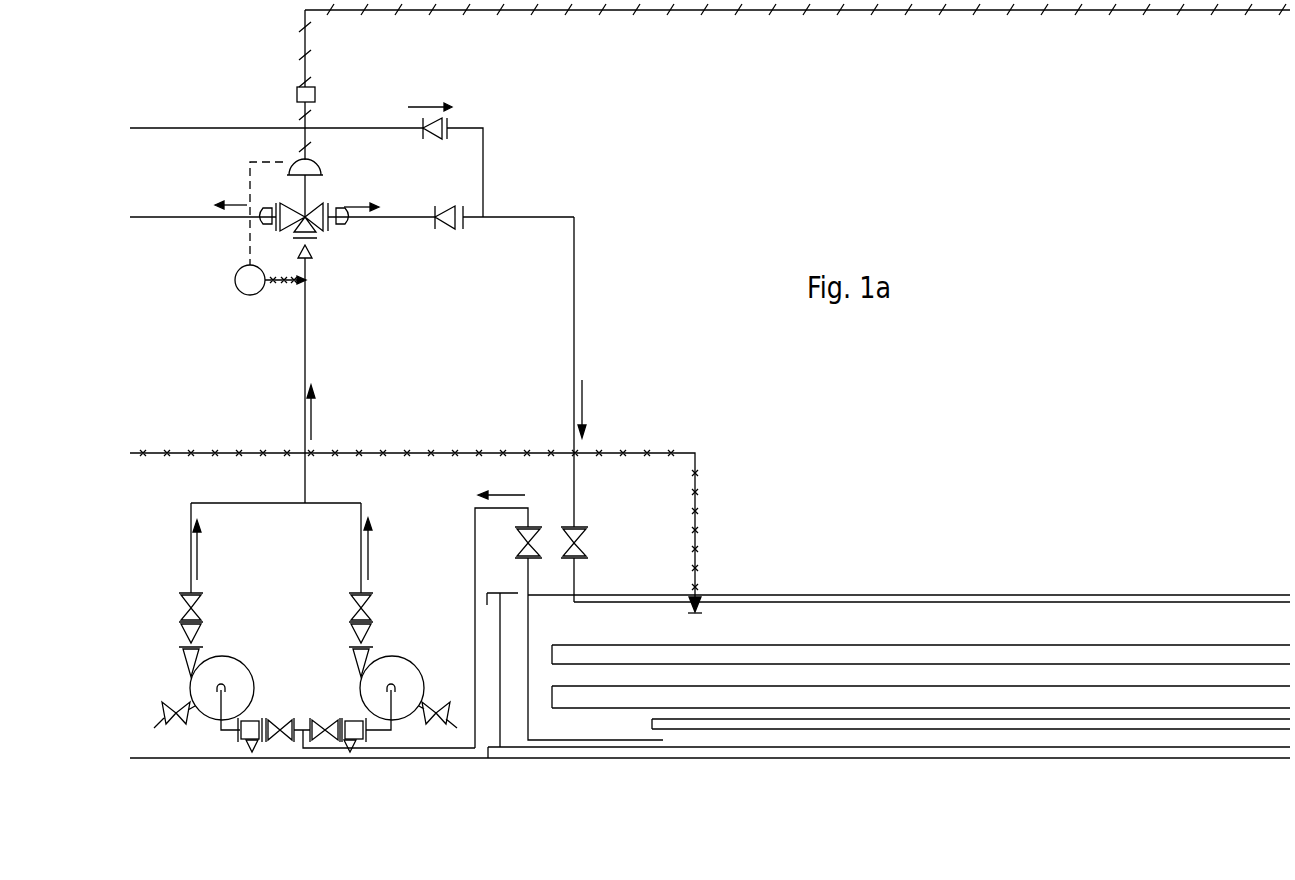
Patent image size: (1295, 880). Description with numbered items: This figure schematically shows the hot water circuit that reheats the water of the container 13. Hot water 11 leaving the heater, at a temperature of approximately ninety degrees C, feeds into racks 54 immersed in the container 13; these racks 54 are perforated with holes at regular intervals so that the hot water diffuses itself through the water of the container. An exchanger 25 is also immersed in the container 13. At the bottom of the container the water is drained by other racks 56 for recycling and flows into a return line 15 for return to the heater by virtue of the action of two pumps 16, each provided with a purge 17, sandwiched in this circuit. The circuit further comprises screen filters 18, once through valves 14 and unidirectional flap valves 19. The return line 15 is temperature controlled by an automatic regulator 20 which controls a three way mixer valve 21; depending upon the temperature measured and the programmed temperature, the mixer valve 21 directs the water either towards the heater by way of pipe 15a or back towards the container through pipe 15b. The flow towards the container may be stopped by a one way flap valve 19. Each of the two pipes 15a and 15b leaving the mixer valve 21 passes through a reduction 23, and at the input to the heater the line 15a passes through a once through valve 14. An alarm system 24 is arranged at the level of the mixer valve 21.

The hot water 11 is at (168, 128).
The container 13 is at (998, 627).
The once through valve 14 is at (563, 538).
The return line 15 is at (305, 372).
The pipe toward heater 15a is at (197, 216).
The pipe toward container 15b is at (387, 216).
The pump 16 is at (240, 677).
The purge 17 is at (172, 707).
The screen filter 18 is at (246, 741).
The unidirectional flap valve 19 is at (450, 228).
The automatic regulator 20 is at (247, 290).
The three way mixer valve 21 is at (312, 222).
The reduction 23 is at (352, 218).
The alarm system 24 is at (318, 164).
The exchanger 25 is at (868, 645).
The rack 54 is at (757, 597).
The rack 56 is at (640, 740).